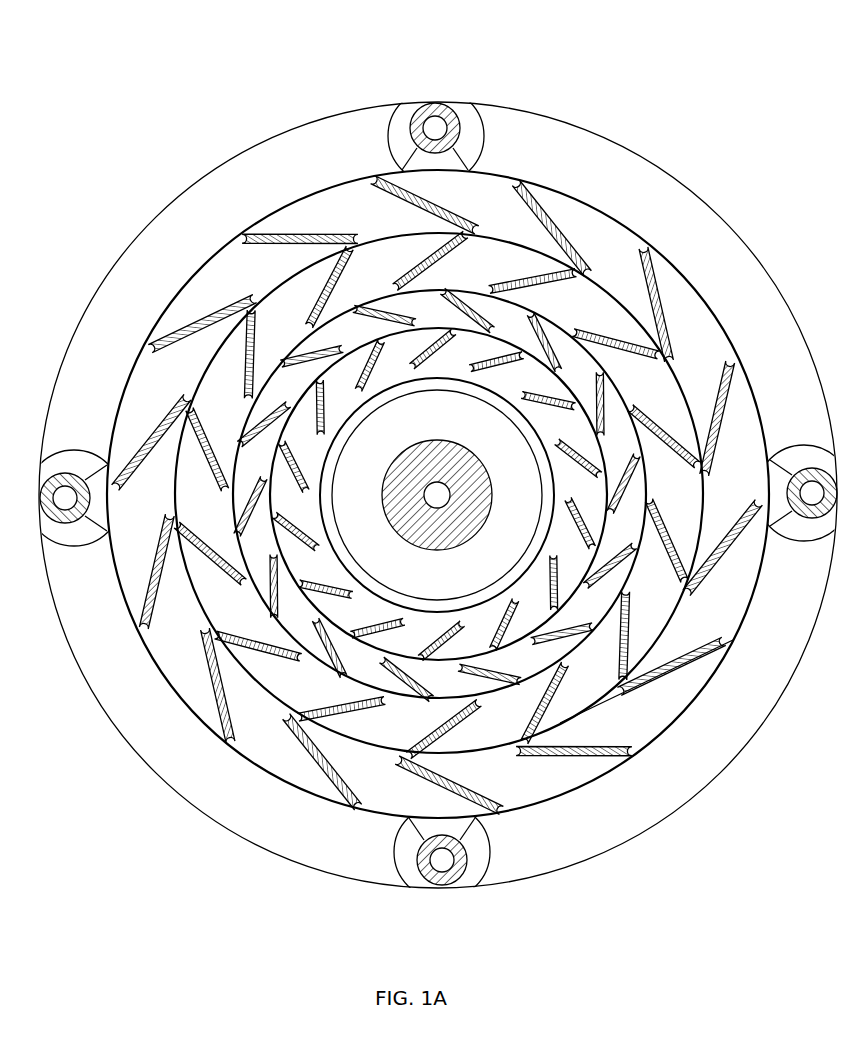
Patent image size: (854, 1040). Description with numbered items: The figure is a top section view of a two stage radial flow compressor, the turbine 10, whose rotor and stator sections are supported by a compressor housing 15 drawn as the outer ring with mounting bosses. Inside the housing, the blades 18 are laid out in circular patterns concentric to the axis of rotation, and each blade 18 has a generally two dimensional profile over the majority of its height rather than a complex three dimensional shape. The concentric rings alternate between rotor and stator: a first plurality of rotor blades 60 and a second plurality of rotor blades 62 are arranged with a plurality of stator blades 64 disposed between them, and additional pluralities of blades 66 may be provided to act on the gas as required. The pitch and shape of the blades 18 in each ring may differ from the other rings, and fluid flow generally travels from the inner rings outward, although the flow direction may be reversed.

The turbine 10 is at (568, 77).
The compressor housing 15 is at (633, 198).
The blades 18 is at (357, 345).
The first plurality of rotor blades 60 is at (580, 622).
The second plurality of rotor blades 62 is at (655, 700).
The plurality of stator blades 64 is at (610, 652).
The additional pluralities of blades 66 is at (522, 612).